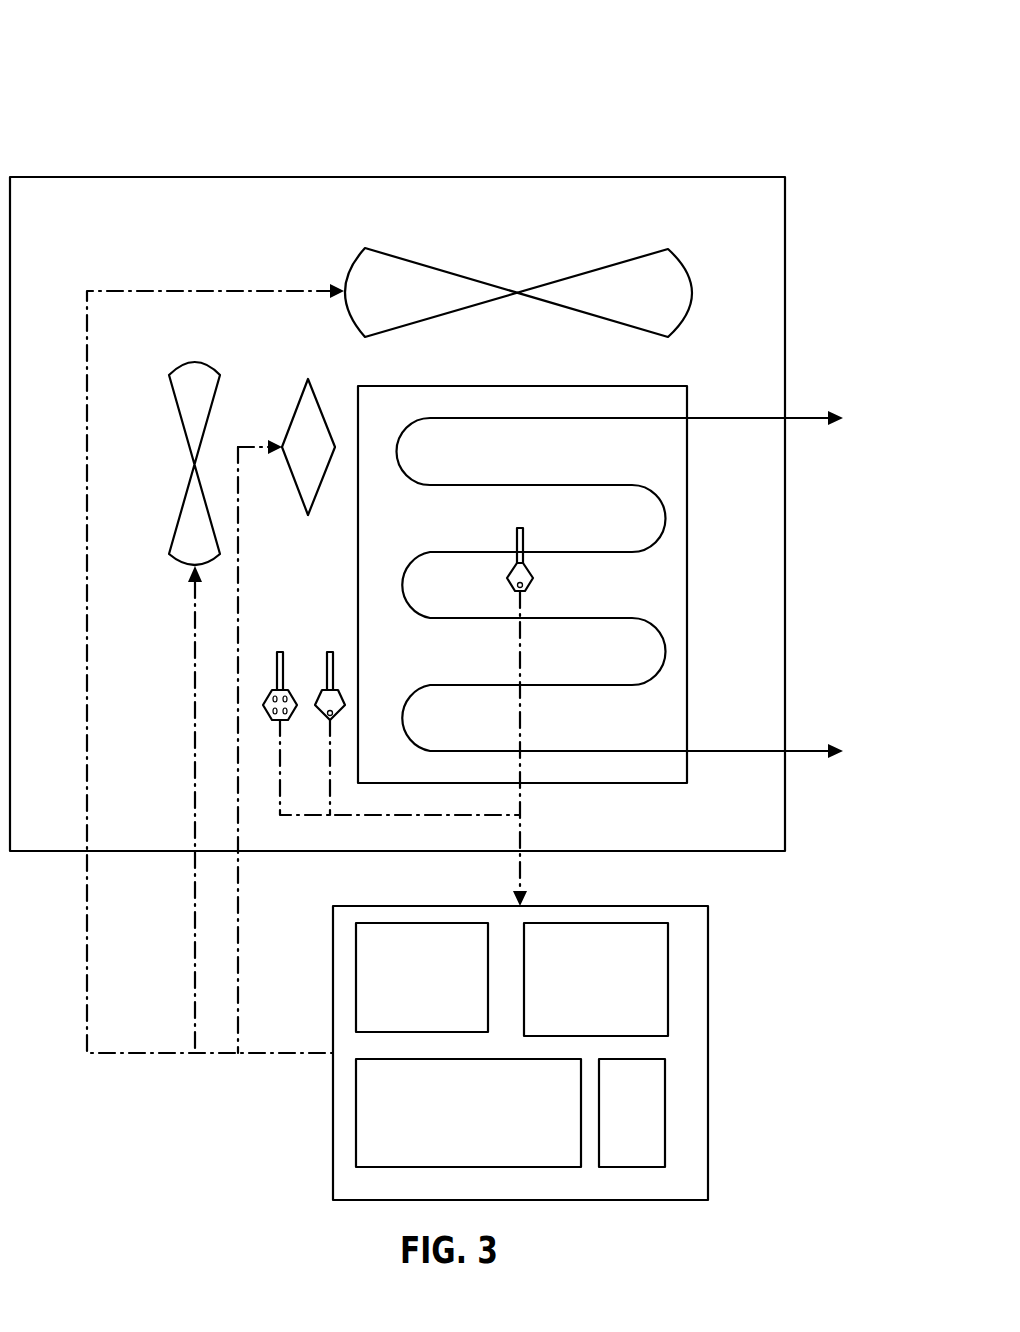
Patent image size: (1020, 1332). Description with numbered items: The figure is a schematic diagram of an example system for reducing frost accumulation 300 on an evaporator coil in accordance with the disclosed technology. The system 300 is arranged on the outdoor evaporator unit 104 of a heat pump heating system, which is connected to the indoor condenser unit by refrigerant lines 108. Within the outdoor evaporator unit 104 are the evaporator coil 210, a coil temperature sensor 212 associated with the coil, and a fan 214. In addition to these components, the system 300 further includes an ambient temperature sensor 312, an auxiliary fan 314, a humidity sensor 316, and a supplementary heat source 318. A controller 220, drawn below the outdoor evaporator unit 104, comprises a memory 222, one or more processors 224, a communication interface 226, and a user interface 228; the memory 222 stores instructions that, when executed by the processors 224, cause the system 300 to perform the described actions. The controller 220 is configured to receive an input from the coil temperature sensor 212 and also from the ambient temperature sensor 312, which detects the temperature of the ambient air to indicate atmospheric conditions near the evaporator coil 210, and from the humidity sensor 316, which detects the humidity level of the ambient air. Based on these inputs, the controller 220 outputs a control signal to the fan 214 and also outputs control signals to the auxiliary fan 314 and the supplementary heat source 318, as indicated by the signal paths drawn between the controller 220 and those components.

The system for reducing frost accumulation 300 is at (155, 50).
The outdoor evaporator unit 104 is at (785, 235).
The refrigerant lines 108 is at (803, 420).
The fan 214 is at (517, 293).
The auxiliary fan 314 is at (195, 463).
The supplementary heat source 318 is at (295, 413).
The evaporator coil 210 is at (663, 650).
The coil temperature sensor 212 is at (537, 575).
The humidity sensor 316 is at (280, 652).
The ambient temperature sensor 312 is at (330, 652).
The controller 220 is at (569, 1053).
The memory 222 is at (422, 977).
The processor 224 is at (596, 979).
The communication interface 226 is at (468, 1113).
The user interface 228 is at (632, 1113).